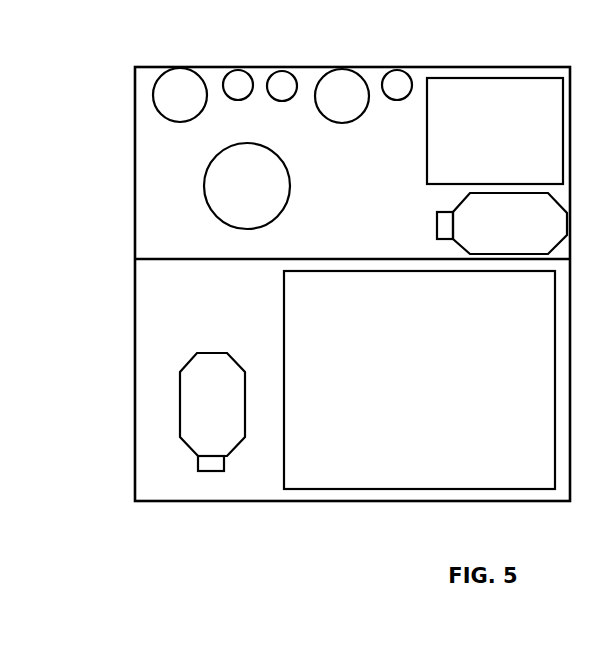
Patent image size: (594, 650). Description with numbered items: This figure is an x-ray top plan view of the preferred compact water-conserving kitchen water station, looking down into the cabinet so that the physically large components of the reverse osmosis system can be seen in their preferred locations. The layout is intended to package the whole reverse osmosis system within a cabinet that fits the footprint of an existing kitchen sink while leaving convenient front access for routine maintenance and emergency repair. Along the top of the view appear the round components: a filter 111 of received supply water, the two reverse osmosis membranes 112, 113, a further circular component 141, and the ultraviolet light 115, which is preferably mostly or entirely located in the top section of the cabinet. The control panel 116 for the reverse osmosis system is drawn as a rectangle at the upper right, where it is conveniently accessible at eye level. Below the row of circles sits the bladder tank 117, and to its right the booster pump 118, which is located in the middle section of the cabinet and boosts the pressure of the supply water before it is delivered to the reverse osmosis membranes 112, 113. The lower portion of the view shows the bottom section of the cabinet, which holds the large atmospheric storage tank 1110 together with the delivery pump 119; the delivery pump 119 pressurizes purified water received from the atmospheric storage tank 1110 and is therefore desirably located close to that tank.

The filter 111 is at (180, 78).
The reverse osmosis membrane 112 is at (238, 80).
The reverse osmosis membrane 113 is at (282, 79).
The circular connector 141 is at (340, 80).
The ultraviolet light 115 is at (395, 79).
The control panel 116 is at (495, 131).
The bladder tank 117 is at (247, 186).
The booster pump 118 is at (502, 223).
The delivery pump 119 is at (212, 412).
The atmospheric storage tank 1110 is at (419, 380).